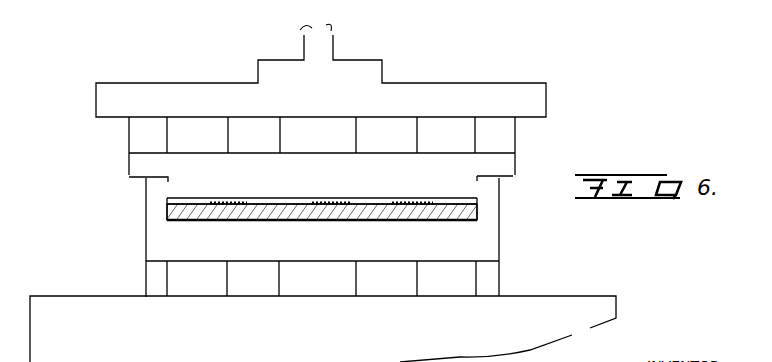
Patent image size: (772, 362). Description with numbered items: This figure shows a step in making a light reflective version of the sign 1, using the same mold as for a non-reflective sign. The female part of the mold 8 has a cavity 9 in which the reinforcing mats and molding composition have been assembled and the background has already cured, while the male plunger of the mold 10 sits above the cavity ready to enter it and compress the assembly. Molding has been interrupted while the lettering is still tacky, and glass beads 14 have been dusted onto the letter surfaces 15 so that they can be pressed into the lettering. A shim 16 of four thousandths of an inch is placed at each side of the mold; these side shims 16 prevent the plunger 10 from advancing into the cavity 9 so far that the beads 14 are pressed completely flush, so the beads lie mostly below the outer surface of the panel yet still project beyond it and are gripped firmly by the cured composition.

The sign 1 is at (276, 229).
The female part of the mold 8 is at (493, 232).
The cavity 9 is at (477, 196).
The male plunger of the mold 10 is at (178, 185).
The glass beads 14 is at (228, 200).
The letter surfaces 15 is at (256, 194).
The shim 16 is at (145, 178).